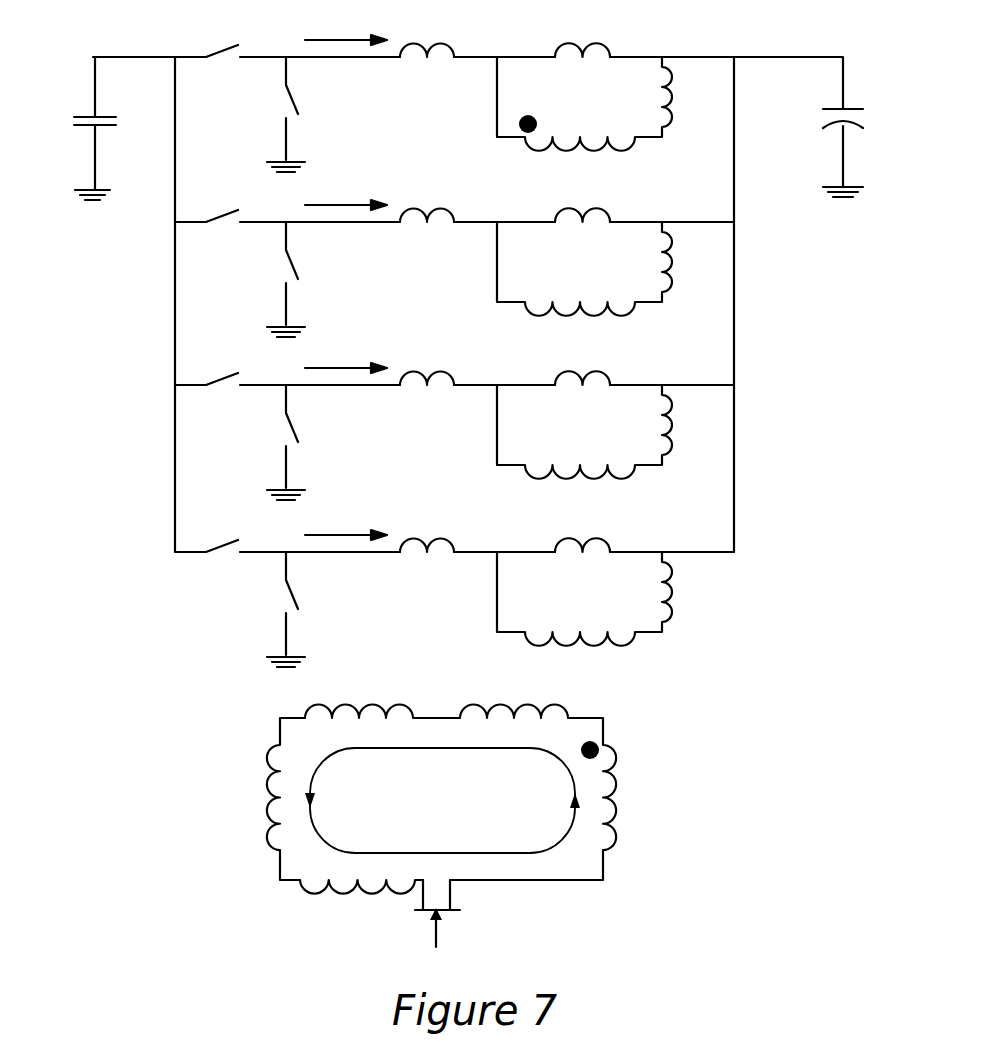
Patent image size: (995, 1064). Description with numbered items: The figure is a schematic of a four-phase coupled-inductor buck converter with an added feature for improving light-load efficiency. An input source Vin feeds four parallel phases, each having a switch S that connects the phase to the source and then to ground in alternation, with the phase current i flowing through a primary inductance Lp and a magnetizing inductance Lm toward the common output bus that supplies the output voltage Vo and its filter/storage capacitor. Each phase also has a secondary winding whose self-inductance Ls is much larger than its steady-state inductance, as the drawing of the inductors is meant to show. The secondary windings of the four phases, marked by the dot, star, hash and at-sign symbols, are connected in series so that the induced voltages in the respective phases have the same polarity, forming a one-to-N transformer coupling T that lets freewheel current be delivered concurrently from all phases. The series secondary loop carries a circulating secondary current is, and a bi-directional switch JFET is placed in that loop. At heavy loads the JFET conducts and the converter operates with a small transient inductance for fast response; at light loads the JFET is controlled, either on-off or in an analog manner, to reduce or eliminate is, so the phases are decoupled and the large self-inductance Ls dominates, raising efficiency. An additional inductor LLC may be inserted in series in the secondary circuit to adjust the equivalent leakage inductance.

The input voltage source Vin is at (101, 128).
The output voltage Vo is at (824, 127).
The phase switches S is at (287, 356).
The primary inductor Lp is at (427, 278).
The magnetizing inductor Lm is at (582, 278).
The self-inductance Ls is at (608, 351).
The phase currents i1-i4 i is at (346, 272).
The transformer winding loop 1:N T is at (467, 793).
The secondary current loop is is at (442, 800).
The additional inductor LLC is at (361, 912).
The element JFET is at (470, 913).